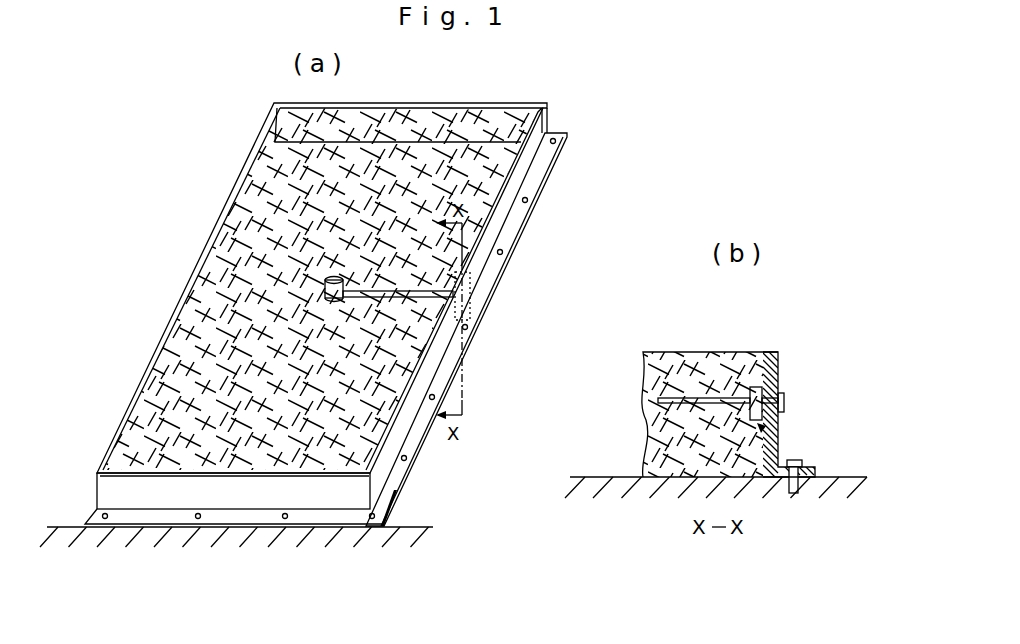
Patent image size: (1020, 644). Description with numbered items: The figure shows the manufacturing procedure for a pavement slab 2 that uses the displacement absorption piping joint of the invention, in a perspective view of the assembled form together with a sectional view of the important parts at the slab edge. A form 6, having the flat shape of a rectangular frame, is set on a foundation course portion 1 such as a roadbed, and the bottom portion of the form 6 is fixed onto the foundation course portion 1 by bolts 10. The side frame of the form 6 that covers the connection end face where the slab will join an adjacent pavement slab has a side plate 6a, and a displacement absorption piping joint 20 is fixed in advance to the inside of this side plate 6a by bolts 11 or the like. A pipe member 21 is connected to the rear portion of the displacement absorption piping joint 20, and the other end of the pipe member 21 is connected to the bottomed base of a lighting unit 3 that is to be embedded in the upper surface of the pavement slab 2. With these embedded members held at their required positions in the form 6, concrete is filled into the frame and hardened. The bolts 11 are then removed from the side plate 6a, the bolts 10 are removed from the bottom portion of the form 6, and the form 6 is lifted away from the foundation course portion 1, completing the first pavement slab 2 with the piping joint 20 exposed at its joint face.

The foundation course portion 1 is at (373, 539).
The pavement slab 2 is at (215, 287).
The lighting unit 3 is at (336, 275).
The form 6 is at (554, 116).
The side plate 6a is at (498, 223).
The bolts 10 is at (433, 399).
The bolts 11 is at (467, 290).
The displacement absorption piping joint 20 is at (450, 313).
The pipe member 21 is at (383, 291).